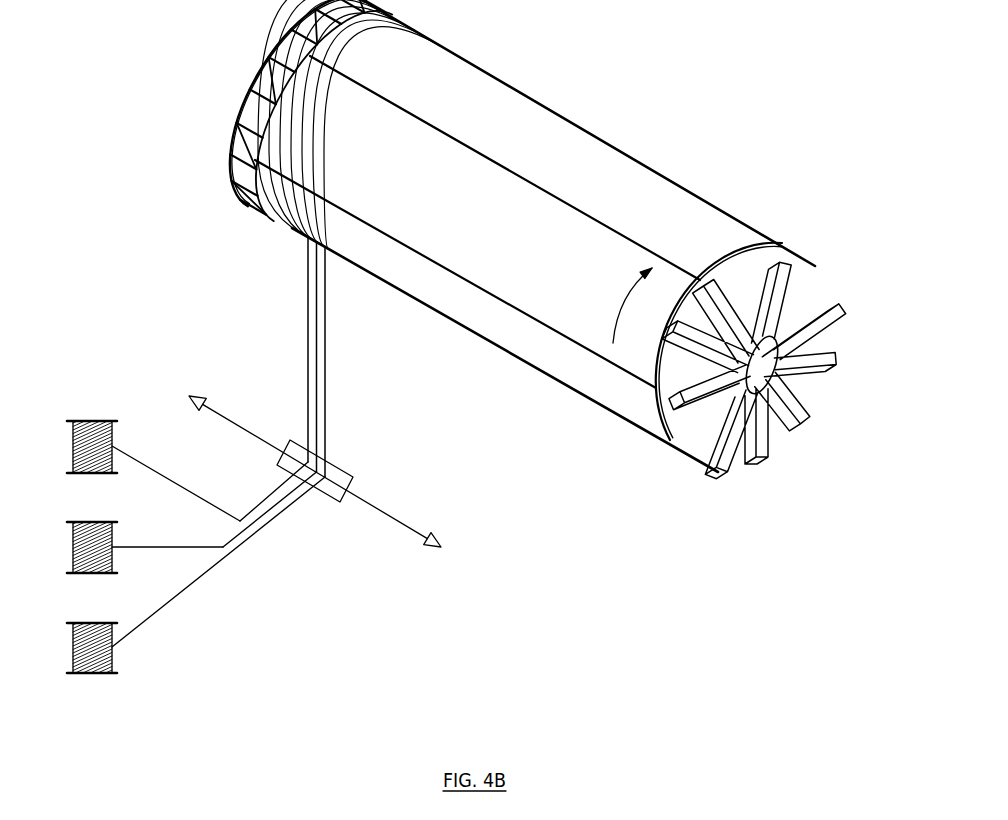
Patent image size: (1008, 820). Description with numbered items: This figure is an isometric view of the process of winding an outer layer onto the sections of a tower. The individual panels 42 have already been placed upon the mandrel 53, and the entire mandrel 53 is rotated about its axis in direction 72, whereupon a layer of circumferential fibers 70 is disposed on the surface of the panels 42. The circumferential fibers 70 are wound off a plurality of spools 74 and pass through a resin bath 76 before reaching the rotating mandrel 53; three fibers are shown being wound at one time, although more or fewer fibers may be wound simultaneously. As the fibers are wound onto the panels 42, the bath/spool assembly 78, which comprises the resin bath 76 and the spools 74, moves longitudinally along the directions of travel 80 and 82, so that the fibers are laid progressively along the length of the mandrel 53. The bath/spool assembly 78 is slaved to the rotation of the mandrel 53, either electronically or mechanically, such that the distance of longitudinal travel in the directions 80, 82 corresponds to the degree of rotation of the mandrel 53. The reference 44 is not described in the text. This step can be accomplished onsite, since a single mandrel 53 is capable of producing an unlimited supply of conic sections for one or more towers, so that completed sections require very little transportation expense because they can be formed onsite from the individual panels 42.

The panels 42 is at (485, 236).
The second web layer surface 44 is at (482, 327).
The mandrel 53 is at (823, 268).
The circumferential fibers 70 is at (327, 397).
The direction 72 is at (625, 300).
The spools 74 is at (90, 420).
The resin bath 76 is at (347, 471).
The bath/spool assembly 78 is at (342, 545).
The direction of travel 80 is at (400, 513).
The direction of travel 82 is at (230, 413).